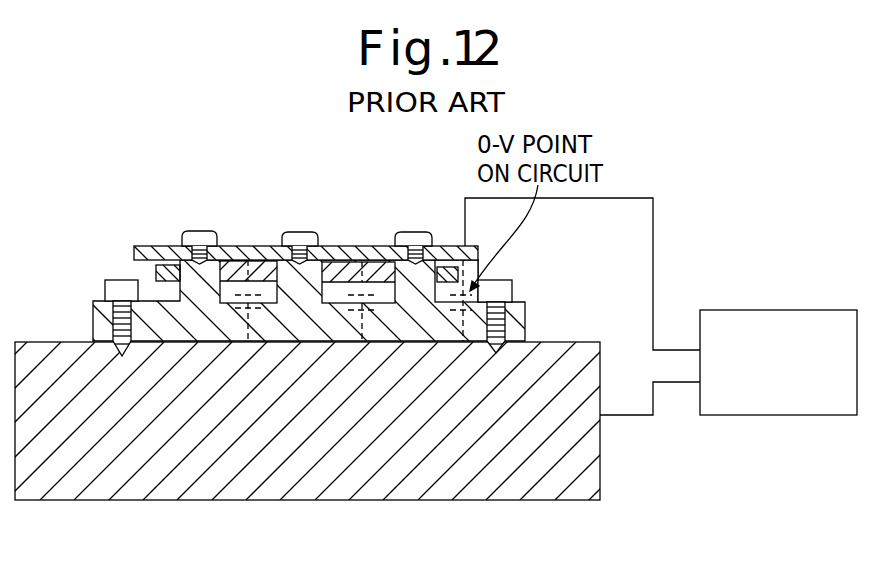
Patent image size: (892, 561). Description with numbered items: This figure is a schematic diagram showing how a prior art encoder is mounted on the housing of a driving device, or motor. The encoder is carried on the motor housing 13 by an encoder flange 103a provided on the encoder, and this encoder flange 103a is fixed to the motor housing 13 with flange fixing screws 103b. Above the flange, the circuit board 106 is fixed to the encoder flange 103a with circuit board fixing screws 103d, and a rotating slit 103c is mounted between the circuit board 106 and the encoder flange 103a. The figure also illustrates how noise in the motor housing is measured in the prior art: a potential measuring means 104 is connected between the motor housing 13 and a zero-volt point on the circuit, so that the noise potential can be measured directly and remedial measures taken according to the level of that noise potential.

The motor housing 13 is at (50, 341).
The encoder flange 103a is at (90, 313).
The flange fixing screws 103b is at (115, 280).
The rotating slit 103c is at (153, 270).
The circuit board fixing screws 103d is at (200, 232).
The circuit board 106 is at (150, 245).
The potential measuring means 104 is at (787, 310).